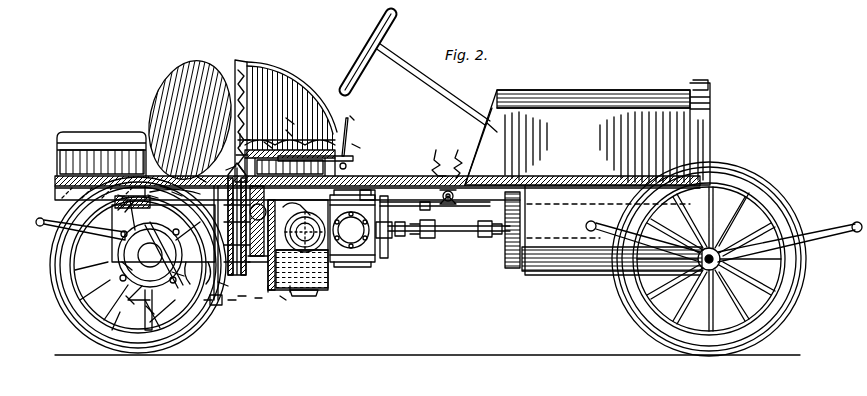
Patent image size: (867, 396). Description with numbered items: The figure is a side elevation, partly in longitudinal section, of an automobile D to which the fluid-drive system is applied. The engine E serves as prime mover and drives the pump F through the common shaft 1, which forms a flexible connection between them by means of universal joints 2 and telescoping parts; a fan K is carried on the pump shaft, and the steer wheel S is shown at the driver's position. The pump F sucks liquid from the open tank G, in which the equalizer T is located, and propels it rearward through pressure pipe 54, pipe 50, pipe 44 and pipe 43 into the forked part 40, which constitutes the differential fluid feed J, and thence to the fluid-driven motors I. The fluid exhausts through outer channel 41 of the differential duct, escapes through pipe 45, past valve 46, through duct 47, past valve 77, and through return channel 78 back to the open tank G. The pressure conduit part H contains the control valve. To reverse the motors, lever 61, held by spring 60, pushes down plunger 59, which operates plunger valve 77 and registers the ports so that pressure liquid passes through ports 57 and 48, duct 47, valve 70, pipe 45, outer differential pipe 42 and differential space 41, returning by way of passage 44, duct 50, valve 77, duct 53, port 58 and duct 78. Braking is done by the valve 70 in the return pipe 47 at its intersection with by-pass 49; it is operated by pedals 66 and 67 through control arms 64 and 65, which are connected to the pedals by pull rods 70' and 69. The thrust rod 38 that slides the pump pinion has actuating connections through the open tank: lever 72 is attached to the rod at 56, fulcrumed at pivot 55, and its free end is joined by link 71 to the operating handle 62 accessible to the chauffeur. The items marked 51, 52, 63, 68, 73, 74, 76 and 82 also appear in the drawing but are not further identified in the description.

The common shaft 1 is at (452, 235).
The universal joints 2 is at (410, 232).
The thrust rod 38 is at (324, 272).
The forked part 40 is at (130, 300).
The outer channel 41 is at (128, 266).
The outer differential pipe 42 is at (120, 246).
The pipe 43 is at (150, 310).
The pipe 44 is at (122, 198).
The pipe 45 is at (152, 198).
The valve 46 is at (176, 195).
The duct 47 is at (200, 180).
The port 48 is at (176, 90).
The by-pass 49 is at (178, 277).
The pipe 50 is at (198, 273).
The shaft 51 is at (208, 304).
The push rod 52 is at (217, 303).
The duct 53 is at (232, 305).
The pressure pipe 54 is at (283, 302).
The pivot 55 is at (293, 290).
The attachment point 56 is at (270, 292).
The port 57 is at (258, 302).
The port 58 is at (246, 219).
The plunger 59 is at (240, 156).
The spring 60 is at (240, 140).
The lever 61 is at (346, 162).
The operating handle 62 is at (350, 131).
The link 63 is at (288, 134).
The control arm 64 is at (166, 190).
The control arm 65 is at (222, 286).
The pedal 66 is at (435, 153).
The pedal 67 is at (458, 153).
The pulley 68 is at (456, 196).
The pull rod 69 is at (437, 210).
The valve 70 is at (175, 191).
The pull rod 70' is at (435, 250).
The link 71 is at (356, 146).
The lever 72 is at (290, 120).
The link 73 is at (352, 118).
The lever 74 is at (268, 146).
The tool box 76 is at (100, 200).
The plunger valve 77 is at (228, 170).
The return channel 78 is at (266, 130).
The crankcase base 82 is at (312, 282).
The automobile D is at (277, 70).
The prime mover E is at (587, 177).
The pump F is at (368, 194).
The open tank G is at (298, 296).
The pressure conduit part H is at (241, 302).
The fluid-driven motors I is at (140, 290).
The differential fluid feed J is at (130, 250).
The fan K is at (388, 256).
The steer wheel S is at (386, 42).
The equalizer T is at (347, 174).